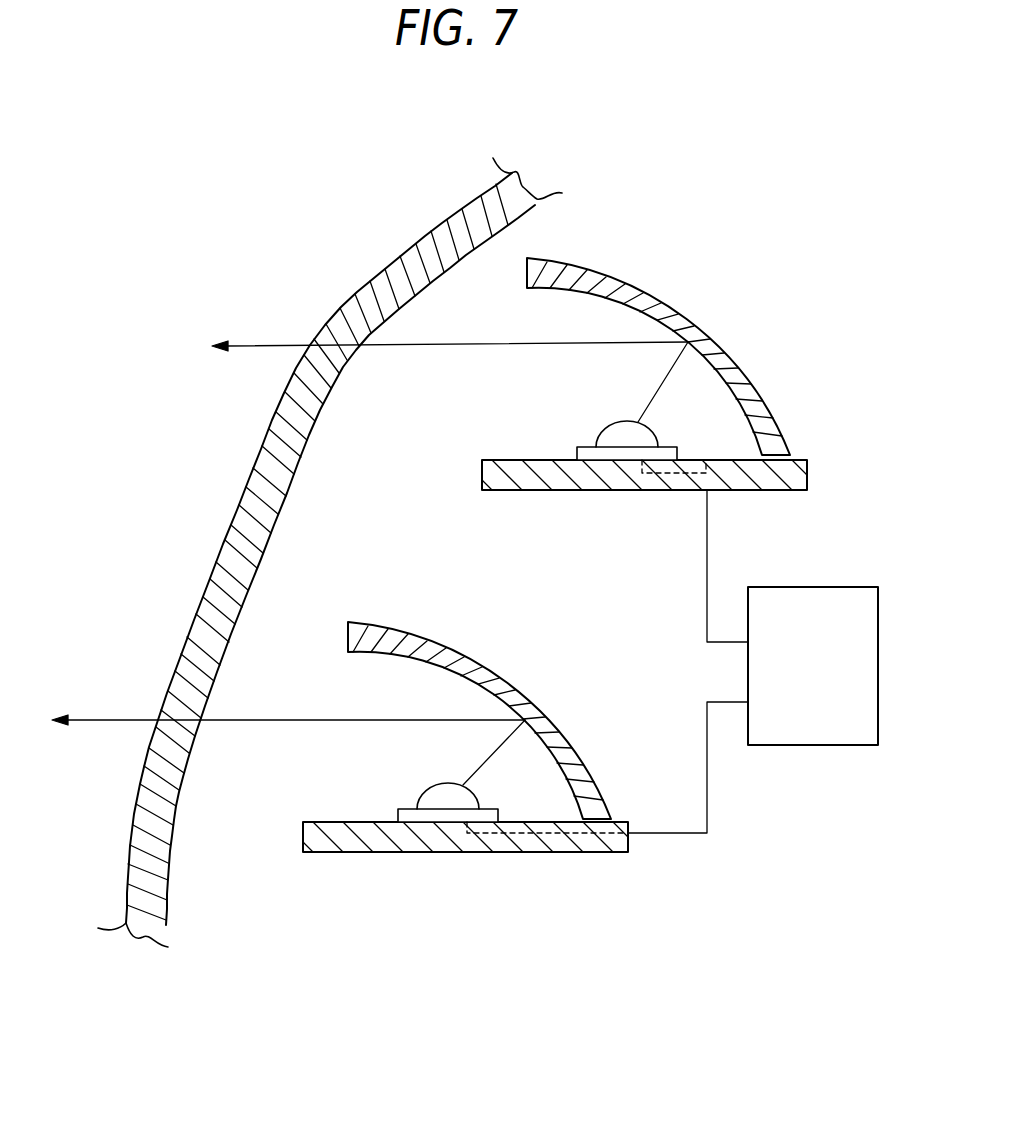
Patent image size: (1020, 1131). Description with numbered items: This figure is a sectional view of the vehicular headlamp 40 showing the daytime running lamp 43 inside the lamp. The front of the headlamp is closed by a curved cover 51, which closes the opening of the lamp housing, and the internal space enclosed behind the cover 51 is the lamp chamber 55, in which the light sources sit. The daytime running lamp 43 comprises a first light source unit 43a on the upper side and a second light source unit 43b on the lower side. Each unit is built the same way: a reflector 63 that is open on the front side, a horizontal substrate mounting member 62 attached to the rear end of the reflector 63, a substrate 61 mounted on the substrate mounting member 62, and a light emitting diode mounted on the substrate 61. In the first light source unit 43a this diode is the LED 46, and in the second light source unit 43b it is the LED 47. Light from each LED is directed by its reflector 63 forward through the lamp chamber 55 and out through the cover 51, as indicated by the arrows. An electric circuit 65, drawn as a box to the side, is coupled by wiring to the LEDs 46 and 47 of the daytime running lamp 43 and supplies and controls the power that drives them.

The vehicular headlamp 40 is at (810, 204).
The daytime running lamp 43 is at (92, 455).
The first light source unit 43a is at (482, 468).
The second light source unit 43b is at (346, 630).
The LED 46 is at (708, 478).
The LED 47 is at (418, 817).
The cover 51 is at (441, 222).
The lamp chamber 55 is at (170, 830).
The substrate 61 is at (596, 447).
The substrate mounting member 62 is at (795, 490).
The reflector 63 is at (655, 280).
The electric circuit 65 is at (815, 745).